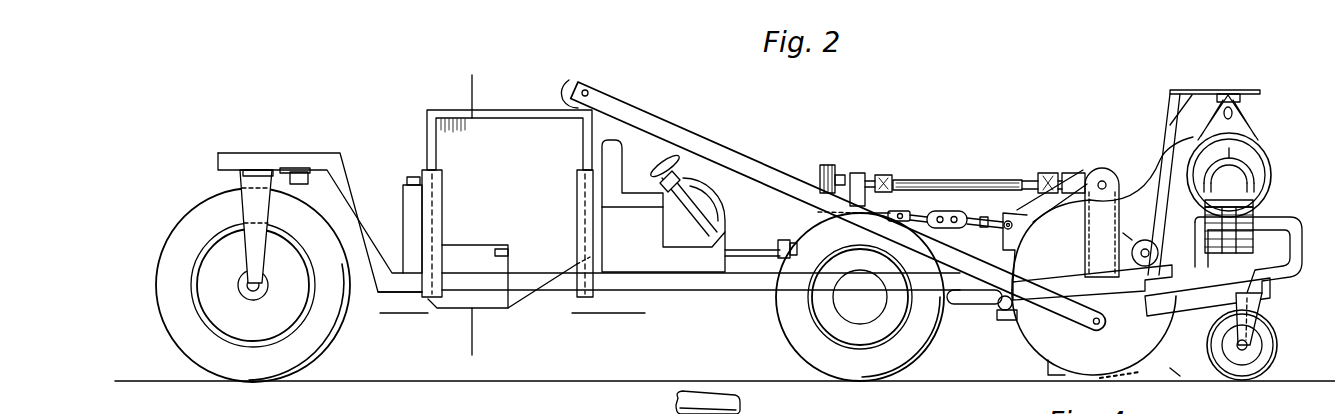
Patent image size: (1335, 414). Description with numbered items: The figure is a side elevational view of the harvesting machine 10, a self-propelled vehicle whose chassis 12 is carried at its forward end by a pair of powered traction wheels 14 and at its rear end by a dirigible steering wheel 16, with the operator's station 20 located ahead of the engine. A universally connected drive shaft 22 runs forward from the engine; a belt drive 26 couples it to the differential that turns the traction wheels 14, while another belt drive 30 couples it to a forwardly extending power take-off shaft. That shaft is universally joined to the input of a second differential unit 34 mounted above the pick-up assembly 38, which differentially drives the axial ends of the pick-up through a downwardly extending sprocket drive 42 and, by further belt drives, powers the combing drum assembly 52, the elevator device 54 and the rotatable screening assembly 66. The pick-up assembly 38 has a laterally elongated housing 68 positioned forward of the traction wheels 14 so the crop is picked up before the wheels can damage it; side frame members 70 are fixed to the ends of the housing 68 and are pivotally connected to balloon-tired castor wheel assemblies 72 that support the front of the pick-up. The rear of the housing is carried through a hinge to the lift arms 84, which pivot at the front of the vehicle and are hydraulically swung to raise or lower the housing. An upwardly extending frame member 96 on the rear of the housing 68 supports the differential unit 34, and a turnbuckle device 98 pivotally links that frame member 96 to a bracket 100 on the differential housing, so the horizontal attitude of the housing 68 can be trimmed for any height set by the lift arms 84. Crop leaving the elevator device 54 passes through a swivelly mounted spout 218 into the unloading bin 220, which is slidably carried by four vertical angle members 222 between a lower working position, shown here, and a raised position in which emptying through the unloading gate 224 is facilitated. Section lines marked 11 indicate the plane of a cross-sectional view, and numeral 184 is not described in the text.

The harvesting machine 10 is at (1003, 78).
The section line 11- 11 is at (410, 315).
The vehicle chassis 12 is at (697, 292).
The powered traction wheels 14 is at (918, 338).
The dirigible steering wheel 16 is at (180, 235).
The operator's station 20 is at (637, 195).
The drive shaft 22 is at (740, 252).
The belt drive 26 is at (785, 244).
The belt drive 30 is at (822, 168).
The second differential unit 34 is at (1078, 176).
The pick-up assembly 38 is at (1030, 347).
The sprocket drive 42 is at (1122, 163).
The combing drum assembly 52 is at (1163, 248).
The elevator device 54 is at (725, 137).
The rotatable screening assembly 66 is at (1275, 140).
The housing 68 is at (1160, 337).
The side frame members 70 is at (1020, 310).
The castor wheel assemblies 72 is at (1272, 309).
The lift arms 84 is at (975, 303).
The frame member 96 is at (1030, 212).
The turnbuckle device 98 is at (950, 212).
The bracket 100 is at (878, 208).
The handle frame 184 is at (1165, 102).
The spout 218 is at (563, 90).
The unloading bin 220 is at (420, 142).
The vertical angle members 222 is at (430, 224).
The unloading gate 224 is at (468, 276).